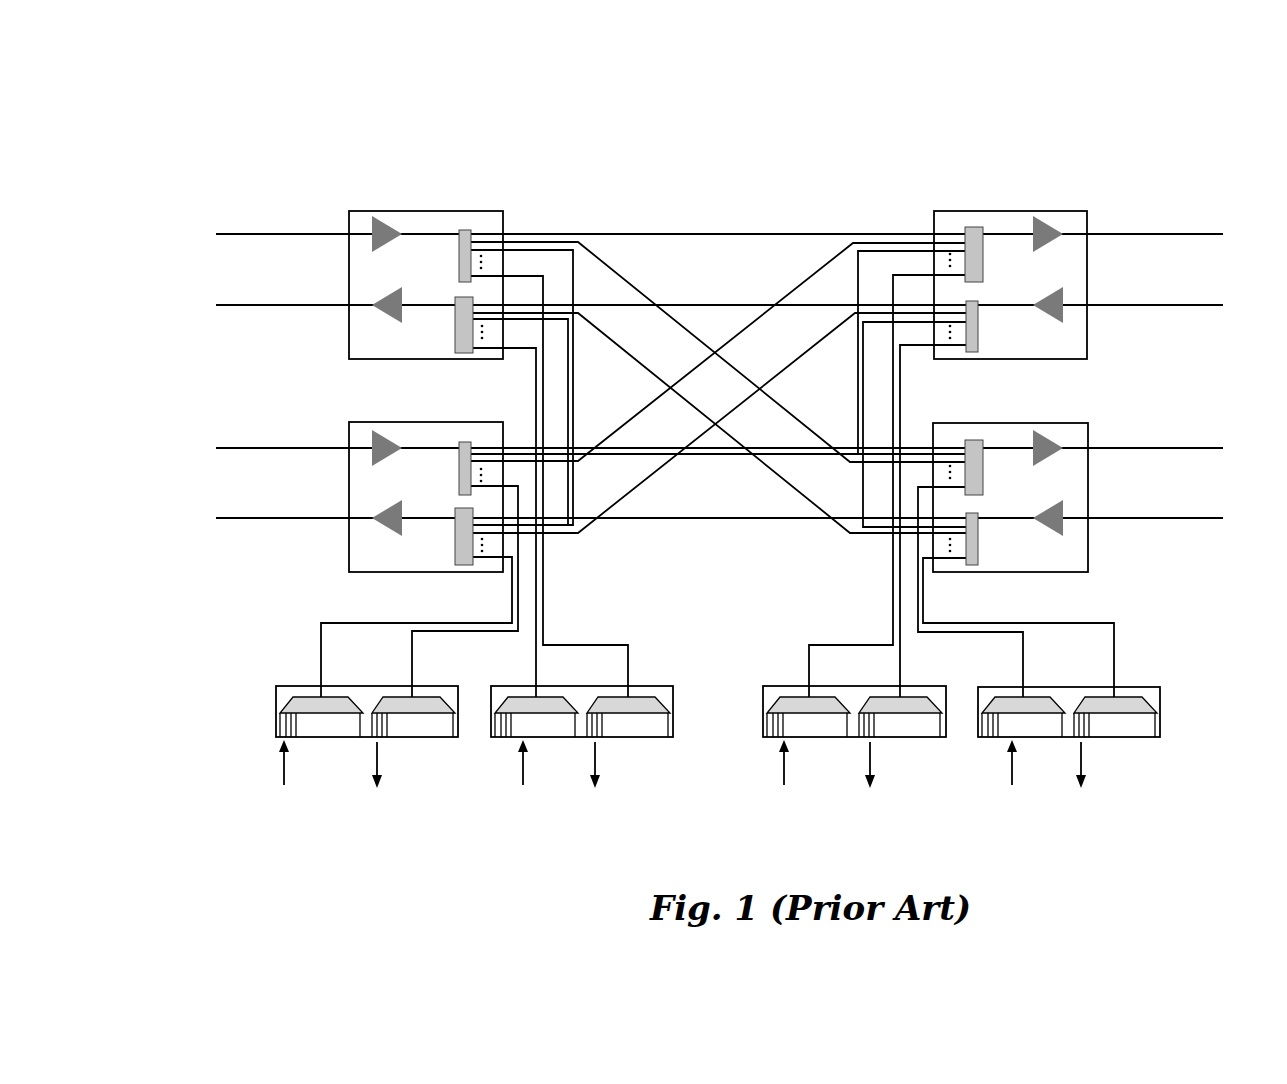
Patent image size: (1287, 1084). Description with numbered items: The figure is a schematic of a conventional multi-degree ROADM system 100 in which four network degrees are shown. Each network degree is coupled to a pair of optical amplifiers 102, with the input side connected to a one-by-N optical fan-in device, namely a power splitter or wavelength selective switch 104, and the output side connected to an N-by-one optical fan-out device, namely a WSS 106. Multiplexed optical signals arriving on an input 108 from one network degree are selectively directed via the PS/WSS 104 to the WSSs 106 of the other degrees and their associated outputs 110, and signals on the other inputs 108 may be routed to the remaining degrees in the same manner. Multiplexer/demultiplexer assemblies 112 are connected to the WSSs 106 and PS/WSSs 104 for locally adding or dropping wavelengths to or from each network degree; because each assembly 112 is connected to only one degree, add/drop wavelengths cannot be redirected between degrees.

The multi-degree ROADM system 100 is at (716, 416).
The optical amplifiers 102 is at (377, 213).
The power splitter or wavelength selective switch 104 is at (463, 232).
The wavelength selective switch 106 is at (458, 341).
The input 108 is at (240, 233).
The output 110 is at (255, 305).
The multiplexer/demultiplexer assembly 112 is at (458, 737).